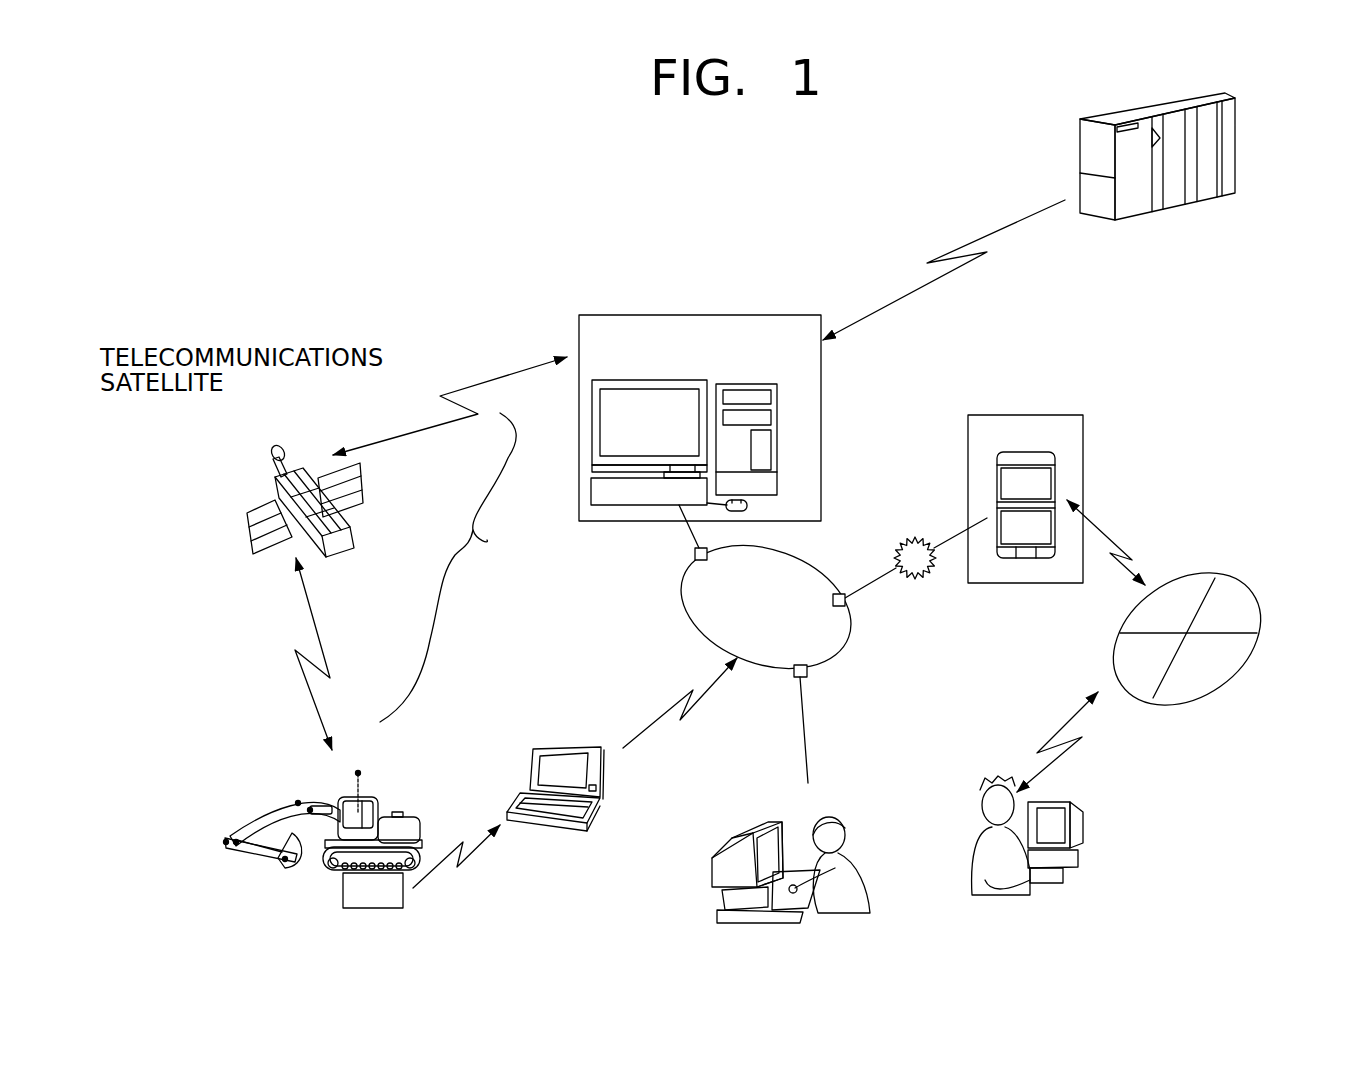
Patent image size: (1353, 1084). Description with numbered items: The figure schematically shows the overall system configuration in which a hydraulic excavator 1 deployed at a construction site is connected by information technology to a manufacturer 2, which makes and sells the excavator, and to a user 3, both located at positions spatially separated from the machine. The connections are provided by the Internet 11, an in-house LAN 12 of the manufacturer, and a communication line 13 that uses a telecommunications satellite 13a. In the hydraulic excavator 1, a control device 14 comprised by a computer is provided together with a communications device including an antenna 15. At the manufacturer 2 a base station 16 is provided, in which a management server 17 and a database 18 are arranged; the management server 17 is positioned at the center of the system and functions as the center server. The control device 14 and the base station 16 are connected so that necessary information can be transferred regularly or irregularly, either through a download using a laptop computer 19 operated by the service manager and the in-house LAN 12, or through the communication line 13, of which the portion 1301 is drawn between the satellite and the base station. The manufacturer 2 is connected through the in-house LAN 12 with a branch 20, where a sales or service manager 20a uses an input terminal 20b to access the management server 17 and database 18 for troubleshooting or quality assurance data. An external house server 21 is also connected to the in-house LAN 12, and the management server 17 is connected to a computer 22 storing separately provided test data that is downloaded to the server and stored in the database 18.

The hydraulic excavator 1 is at (382, 800).
The manufacturer 2 is at (897, 415).
The user 3 is at (978, 788).
The Internet 11 is at (1182, 575).
The in-house LAN 12 is at (688, 616).
The communication line 13 is at (488, 542).
The telecommunications satellite 13a is at (298, 467).
The control device 14 is at (403, 897).
The antenna 15 is at (356, 773).
The base station 16 is at (695, 313).
The management server 17 is at (623, 380).
The database 18 is at (738, 383).
The laptop computer 19 is at (562, 747).
The branch 20 is at (832, 802).
The sales manager or service manager 20a is at (847, 827).
The input terminal 20b is at (713, 852).
The external house server 21 is at (1083, 447).
The computer 22 is at (1080, 156).
The portion of the communications line 1301 is at (495, 377).